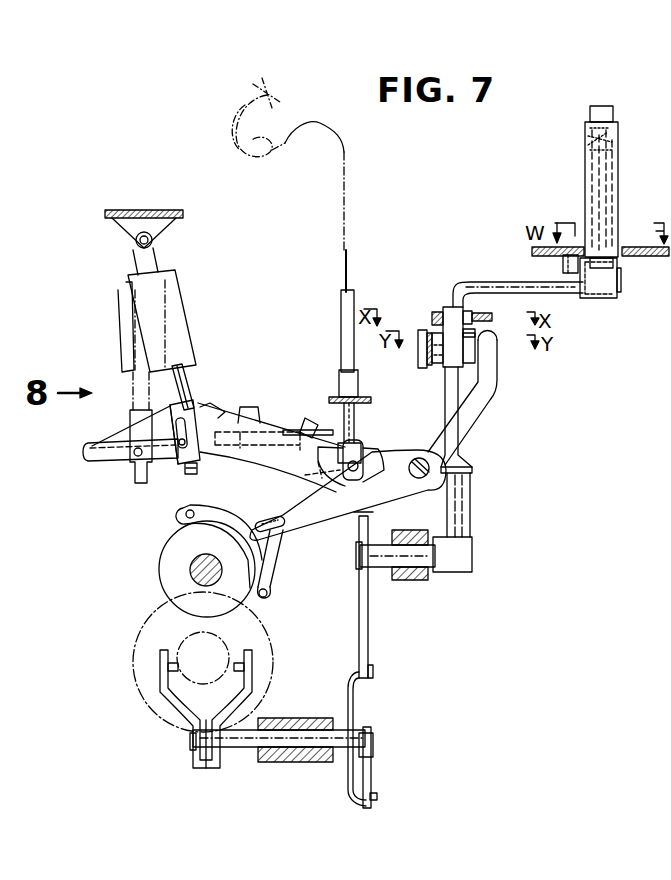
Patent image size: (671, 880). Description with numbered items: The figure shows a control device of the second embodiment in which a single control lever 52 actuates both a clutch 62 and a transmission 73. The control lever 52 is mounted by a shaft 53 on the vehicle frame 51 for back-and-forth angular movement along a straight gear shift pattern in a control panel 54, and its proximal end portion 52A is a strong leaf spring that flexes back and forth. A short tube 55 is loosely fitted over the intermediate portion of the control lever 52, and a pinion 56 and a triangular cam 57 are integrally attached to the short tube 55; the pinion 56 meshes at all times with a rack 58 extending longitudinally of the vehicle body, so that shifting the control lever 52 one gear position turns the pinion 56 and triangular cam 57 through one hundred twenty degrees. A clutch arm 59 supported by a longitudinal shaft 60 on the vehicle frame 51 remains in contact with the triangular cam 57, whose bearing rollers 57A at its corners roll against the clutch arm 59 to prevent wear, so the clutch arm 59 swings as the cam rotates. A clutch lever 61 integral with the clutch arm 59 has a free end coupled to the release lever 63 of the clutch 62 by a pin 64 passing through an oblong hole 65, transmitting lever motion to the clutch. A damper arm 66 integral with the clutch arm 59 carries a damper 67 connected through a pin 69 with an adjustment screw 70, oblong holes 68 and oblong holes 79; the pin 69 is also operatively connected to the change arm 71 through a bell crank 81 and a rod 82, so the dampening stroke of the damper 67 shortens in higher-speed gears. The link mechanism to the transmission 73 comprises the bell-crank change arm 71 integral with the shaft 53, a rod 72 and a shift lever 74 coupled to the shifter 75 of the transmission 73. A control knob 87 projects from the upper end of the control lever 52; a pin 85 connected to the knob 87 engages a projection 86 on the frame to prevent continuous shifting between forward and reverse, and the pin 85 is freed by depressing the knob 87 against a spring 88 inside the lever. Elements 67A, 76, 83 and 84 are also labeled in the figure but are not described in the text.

The vehicle frame 51 is at (137, 208).
The control lever 52 is at (586, 188).
The proximal end portion 52A is at (466, 498).
The shaft 53 is at (385, 566).
The control panel 54 is at (635, 248).
The short tube 55 is at (450, 308).
The pinion 56 is at (432, 316).
The triangular cam 57 is at (475, 334).
The bearing rollers 57A is at (418, 348).
The rack 58 is at (480, 311).
The clutch arm 59 is at (470, 398).
The longitudinal shaft 60 is at (419, 456).
The clutch lever 61 is at (352, 494).
The clutch 62 is at (152, 540).
The release lever 63 is at (275, 578).
The pin 64 is at (277, 548).
The oblong hole 65 is at (285, 528).
The damper arm 66 is at (283, 466).
The damper 67 is at (150, 340).
The piston rod 67A is at (185, 378).
The oblong holes 68 is at (192, 404).
The pin 69 is at (178, 462).
The adjustment screw 70 is at (200, 470).
The change arm 71 is at (358, 632).
The rod 72 is at (348, 690).
The transmission 73 is at (128, 655).
The shift lever 74 is at (375, 762).
The shifter 75 is at (178, 712).
The shaft 76 is at (242, 750).
The oblong holes 79 is at (103, 460).
The bell crank 81 is at (300, 428).
The rod 82 is at (305, 472).
The hook 83 is at (272, 88).
The wire rod 84 is at (344, 258).
The pin 85 is at (563, 263).
The projection 86 is at (580, 292).
The control knob 87 is at (602, 106).
The spring 88 is at (584, 140).